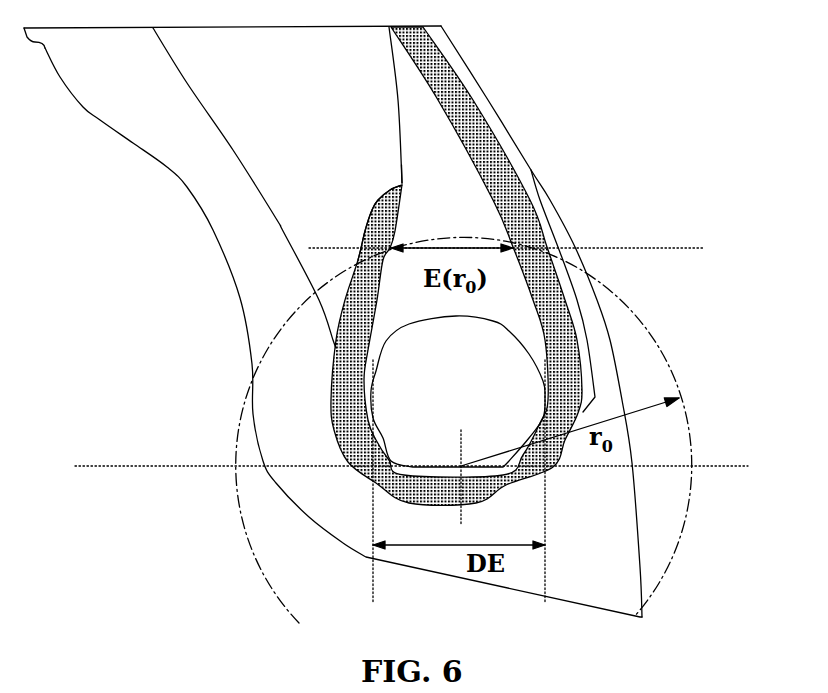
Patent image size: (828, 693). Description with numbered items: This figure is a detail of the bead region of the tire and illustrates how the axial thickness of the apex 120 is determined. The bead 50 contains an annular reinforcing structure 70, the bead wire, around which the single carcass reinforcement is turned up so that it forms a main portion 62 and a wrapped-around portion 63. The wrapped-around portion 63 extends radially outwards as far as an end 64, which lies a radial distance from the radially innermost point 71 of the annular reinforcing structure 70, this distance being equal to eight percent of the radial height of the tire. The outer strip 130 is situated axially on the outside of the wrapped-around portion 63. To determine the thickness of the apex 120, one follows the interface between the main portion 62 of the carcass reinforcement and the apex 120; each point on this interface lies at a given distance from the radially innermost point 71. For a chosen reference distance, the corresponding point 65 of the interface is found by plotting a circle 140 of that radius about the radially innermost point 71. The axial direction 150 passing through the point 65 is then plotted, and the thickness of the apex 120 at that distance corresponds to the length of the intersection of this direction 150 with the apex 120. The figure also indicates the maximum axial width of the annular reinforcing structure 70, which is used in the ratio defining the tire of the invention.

The bead 50 is at (284, 423).
The main portion 62 is at (443, 67).
The wrapped-around portion 63 is at (370, 212).
The end 64 is at (399, 180).
The point of the interface 65 is at (516, 244).
The annular reinforcing structure 70 is at (475, 409).
The radially innermost point 71 is at (461, 474).
The apex 120 is at (457, 180).
The outer strip 130 is at (310, 90).
The circle 140 is at (634, 319).
The axial direction 150 is at (649, 246).